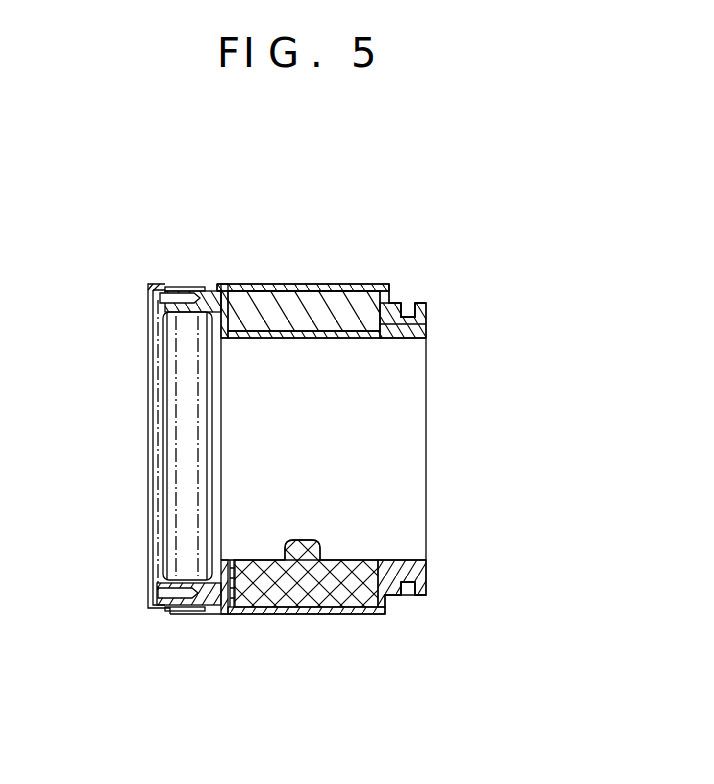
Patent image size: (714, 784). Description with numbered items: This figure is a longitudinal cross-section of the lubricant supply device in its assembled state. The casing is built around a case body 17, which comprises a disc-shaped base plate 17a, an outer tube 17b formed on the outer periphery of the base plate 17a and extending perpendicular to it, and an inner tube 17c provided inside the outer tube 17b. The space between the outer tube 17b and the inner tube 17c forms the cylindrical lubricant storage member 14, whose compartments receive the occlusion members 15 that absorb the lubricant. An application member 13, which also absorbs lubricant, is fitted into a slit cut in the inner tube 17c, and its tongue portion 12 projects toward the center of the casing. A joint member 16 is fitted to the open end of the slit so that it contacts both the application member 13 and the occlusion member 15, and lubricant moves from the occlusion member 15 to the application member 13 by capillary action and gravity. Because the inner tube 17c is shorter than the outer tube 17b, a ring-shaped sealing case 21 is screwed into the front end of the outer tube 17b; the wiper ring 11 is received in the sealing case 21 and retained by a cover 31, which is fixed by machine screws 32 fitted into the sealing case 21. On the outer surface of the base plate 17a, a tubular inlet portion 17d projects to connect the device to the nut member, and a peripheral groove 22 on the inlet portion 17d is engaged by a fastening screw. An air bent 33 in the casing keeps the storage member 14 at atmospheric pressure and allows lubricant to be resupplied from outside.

The wiper ring 11 is at (185, 408).
The tongue portion 12 is at (318, 542).
The application member 13 is at (327, 597).
The lubricant storage member 14 is at (362, 305).
The occlusion member 15 is at (253, 300).
The joint member 16 is at (236, 600).
The case body 17 is at (306, 282).
The base plate 17a is at (392, 303).
The outer tube 17b is at (330, 286).
The inner tube 17c is at (279, 286).
The tubular inlet portion 17d is at (417, 570).
The sealing case 21 is at (216, 290).
The groove 22 is at (405, 587).
The cover 31 is at (157, 323).
The machine screw 32 is at (162, 283).
The air bent 33 is at (414, 312).